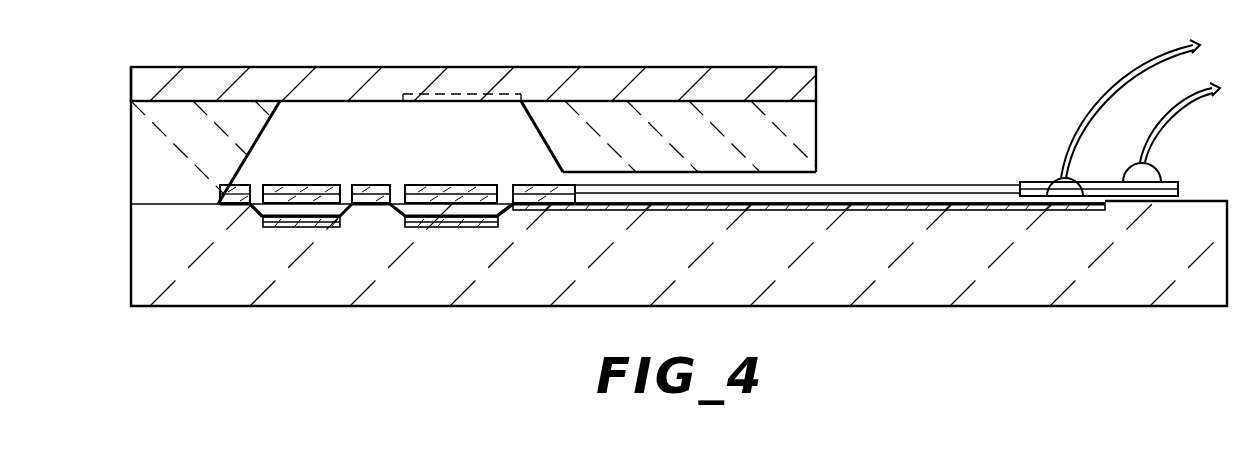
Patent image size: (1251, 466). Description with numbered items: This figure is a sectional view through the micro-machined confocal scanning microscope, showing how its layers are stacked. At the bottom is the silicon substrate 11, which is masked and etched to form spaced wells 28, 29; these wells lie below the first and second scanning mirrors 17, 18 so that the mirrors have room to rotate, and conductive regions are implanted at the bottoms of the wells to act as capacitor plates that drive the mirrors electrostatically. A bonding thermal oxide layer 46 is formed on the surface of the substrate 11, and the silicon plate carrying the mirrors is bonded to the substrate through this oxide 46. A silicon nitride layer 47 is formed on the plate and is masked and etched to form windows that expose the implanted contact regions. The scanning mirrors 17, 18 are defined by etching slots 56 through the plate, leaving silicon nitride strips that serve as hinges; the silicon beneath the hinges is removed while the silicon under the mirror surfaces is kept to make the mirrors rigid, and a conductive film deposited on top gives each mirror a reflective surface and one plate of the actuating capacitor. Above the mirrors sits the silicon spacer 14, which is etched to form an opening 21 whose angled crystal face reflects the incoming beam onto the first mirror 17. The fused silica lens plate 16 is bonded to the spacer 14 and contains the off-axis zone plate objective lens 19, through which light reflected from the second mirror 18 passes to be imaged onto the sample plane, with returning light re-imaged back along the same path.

The silicon substrate 11 is at (962, 272).
The silicon spacer 14 is at (806, 117).
The fused silica lens plate 16 is at (722, 76).
The first scanning mirror 17 is at (313, 198).
The second scanning mirror 18 is at (450, 200).
The objective lens 19 is at (519, 90).
The opening 21 is at (300, 123).
The well 28 is at (250, 210).
The well 29 is at (512, 212).
The bonding thermal oxide layer 46 is at (712, 198).
The silicon nitride layer 47 is at (537, 187).
The slots 56 is at (253, 188).